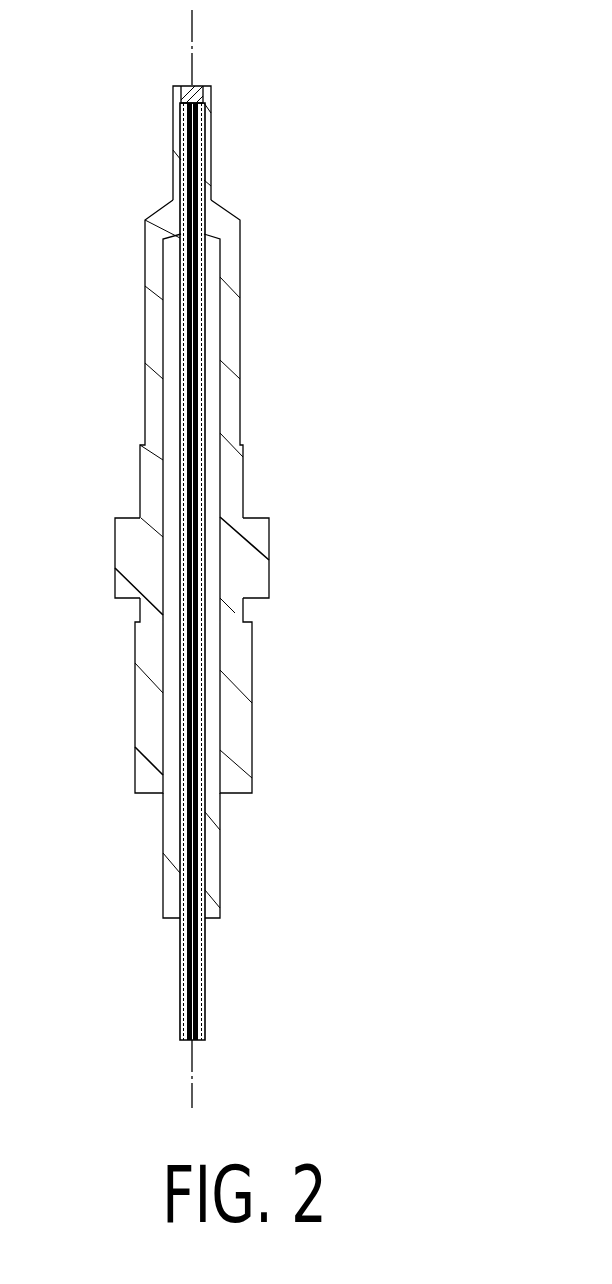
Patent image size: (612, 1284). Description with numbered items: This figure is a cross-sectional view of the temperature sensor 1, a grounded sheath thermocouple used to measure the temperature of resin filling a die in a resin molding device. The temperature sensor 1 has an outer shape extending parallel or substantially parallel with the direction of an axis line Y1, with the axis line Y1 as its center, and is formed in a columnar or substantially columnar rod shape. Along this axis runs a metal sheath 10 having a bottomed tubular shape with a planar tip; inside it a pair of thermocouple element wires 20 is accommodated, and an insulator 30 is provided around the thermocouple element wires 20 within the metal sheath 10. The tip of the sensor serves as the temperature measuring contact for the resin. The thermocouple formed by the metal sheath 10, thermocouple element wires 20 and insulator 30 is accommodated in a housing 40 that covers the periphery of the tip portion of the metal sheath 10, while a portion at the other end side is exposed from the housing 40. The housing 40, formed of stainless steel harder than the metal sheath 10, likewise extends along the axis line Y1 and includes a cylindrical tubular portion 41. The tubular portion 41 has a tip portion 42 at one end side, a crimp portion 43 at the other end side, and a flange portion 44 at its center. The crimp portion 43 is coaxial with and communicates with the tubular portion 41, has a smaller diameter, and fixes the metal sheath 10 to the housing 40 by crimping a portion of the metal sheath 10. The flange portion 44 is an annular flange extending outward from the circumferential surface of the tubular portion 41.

The temperature sensor 1 is at (246, 552).
The metal sheath 10 is at (180, 968).
The thermocouple element wires 20 is at (187, 987).
The insulator 30 is at (202, 935).
The housing 40 is at (238, 502).
The tubular portion 41 is at (232, 483).
The tip portion 42 is at (211, 168).
The crimp portion 43 is at (212, 847).
The flange portion 44 is at (257, 560).
The axis line Y1 is at (193, 22).